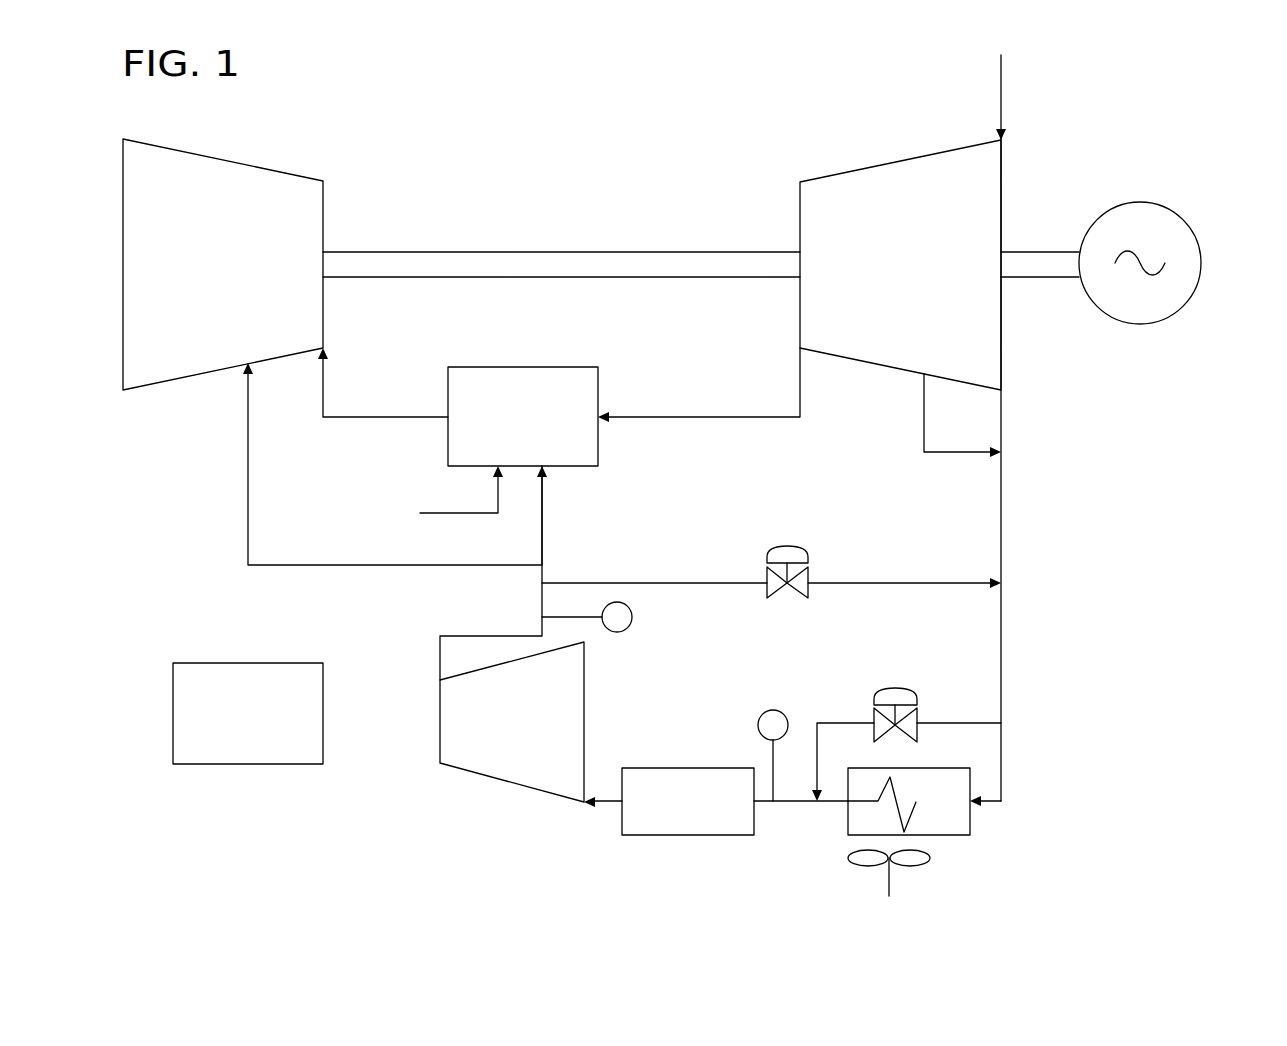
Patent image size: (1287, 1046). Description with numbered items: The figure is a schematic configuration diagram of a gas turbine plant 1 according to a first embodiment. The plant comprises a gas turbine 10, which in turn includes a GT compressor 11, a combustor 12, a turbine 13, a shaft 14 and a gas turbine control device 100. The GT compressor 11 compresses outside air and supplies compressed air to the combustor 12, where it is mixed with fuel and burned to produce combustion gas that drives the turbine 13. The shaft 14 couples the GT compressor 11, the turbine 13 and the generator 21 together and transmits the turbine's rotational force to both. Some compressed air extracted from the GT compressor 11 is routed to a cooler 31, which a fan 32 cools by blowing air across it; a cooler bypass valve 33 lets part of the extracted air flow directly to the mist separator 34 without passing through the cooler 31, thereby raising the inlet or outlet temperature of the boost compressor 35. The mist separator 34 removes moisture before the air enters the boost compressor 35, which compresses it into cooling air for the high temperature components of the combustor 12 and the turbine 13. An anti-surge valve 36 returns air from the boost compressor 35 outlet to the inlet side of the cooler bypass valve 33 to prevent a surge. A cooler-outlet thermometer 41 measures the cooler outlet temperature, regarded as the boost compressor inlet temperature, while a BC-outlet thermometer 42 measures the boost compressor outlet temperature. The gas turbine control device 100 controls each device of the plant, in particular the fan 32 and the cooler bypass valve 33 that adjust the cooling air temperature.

The gas turbine plant 1 is at (1095, 172).
The gas turbine 10 is at (562, 196).
The GT compressor 11 is at (902, 158).
The combustor 12 is at (524, 367).
The turbine 13 is at (236, 163).
The shaft 14 is at (684, 251).
The generator 21 is at (1135, 326).
The cooler 31 is at (940, 768).
The fan 32 is at (891, 876).
The cooler bypass valve 33 is at (895, 688).
The mist separator 34 is at (688, 768).
The boost compressor 35 is at (585, 688).
The anti-surge valve 36 is at (786, 547).
The cooler-outlet thermometer 41 is at (779, 711).
The BC-outlet thermometer 42 is at (633, 617).
The gas turbine control device 100 is at (245, 663).